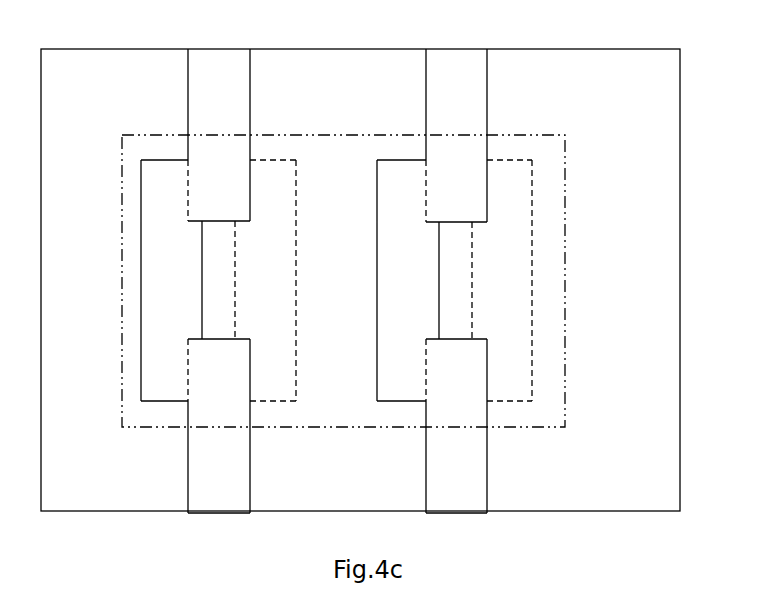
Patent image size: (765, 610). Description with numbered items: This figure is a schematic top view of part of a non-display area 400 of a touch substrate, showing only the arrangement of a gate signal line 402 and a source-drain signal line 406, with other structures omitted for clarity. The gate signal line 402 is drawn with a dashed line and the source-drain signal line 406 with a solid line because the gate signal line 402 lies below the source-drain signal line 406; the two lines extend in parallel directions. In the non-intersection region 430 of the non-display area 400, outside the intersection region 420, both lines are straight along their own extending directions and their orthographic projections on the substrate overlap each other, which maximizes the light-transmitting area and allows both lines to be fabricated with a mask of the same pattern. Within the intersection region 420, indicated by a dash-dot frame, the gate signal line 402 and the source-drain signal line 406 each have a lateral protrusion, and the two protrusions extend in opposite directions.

The non-display area 400 is at (102, 31).
The non-intersection region 430 is at (119, 95).
The intersection region 420 is at (372, 419).
The source-drain signal line 406 is at (337, 281).
The gate signal line 402 is at (336, 280).